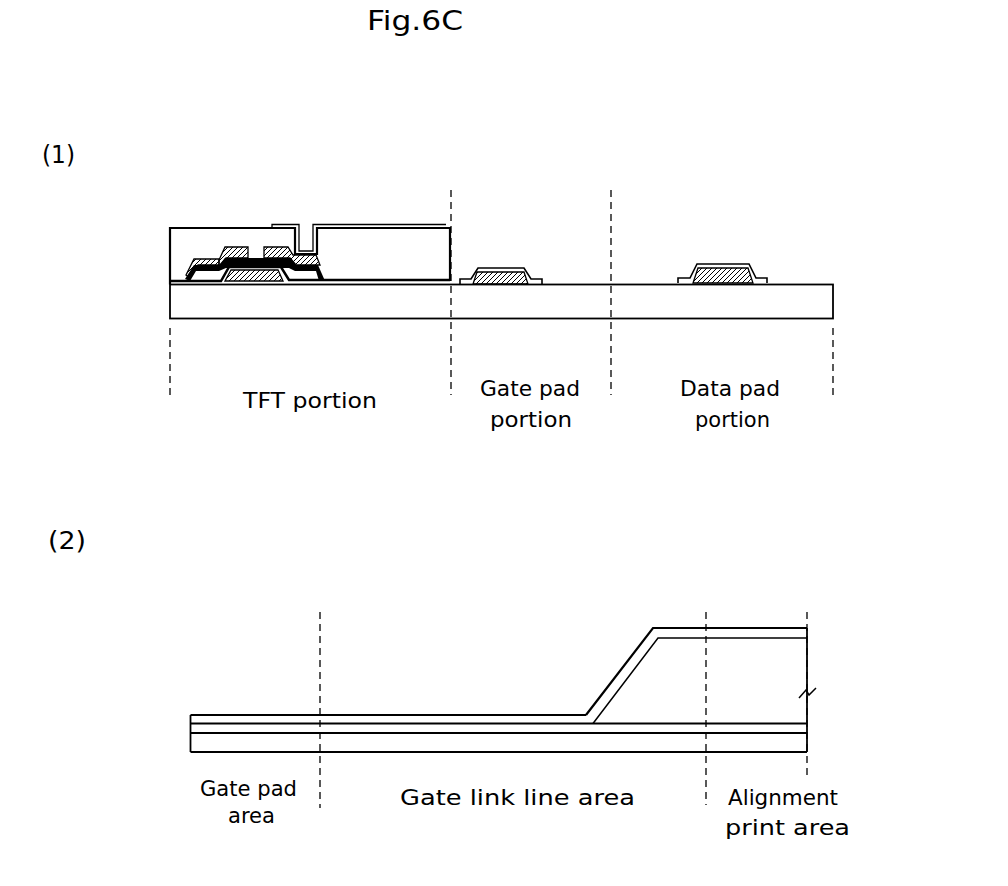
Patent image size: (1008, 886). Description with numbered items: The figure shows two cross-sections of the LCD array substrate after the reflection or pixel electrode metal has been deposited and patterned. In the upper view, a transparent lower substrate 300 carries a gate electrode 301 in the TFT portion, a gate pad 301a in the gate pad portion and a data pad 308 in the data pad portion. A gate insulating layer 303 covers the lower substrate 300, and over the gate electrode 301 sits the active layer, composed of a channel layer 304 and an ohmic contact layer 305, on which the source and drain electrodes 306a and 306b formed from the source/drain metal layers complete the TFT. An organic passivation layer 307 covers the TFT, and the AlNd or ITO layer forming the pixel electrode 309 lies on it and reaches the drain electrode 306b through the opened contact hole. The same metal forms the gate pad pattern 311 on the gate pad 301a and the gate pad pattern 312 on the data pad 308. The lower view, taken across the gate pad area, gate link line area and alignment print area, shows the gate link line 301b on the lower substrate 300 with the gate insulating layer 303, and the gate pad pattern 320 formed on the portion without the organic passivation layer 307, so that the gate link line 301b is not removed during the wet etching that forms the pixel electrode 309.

The lower substrate 300 is at (207, 308).
The gate electrode 301 is at (254, 283).
The gate pad 301a is at (497, 271).
The gate link line 301b is at (375, 727).
The gate insulating layer 303 is at (170, 284).
The channel layer 304 is at (184, 277).
The ohmic contact layer 305 is at (186, 267).
The source electrode 306a is at (230, 249).
The drain electrode 306b is at (279, 247).
The organic passivation layer 307 is at (400, 240).
The data pad 308 is at (726, 268).
The pixel electrode 309 is at (375, 222).
The gate pad pattern 311 is at (529, 268).
The gate pad pattern 312 is at (691, 265).
The gate pad pattern 320 is at (495, 715).